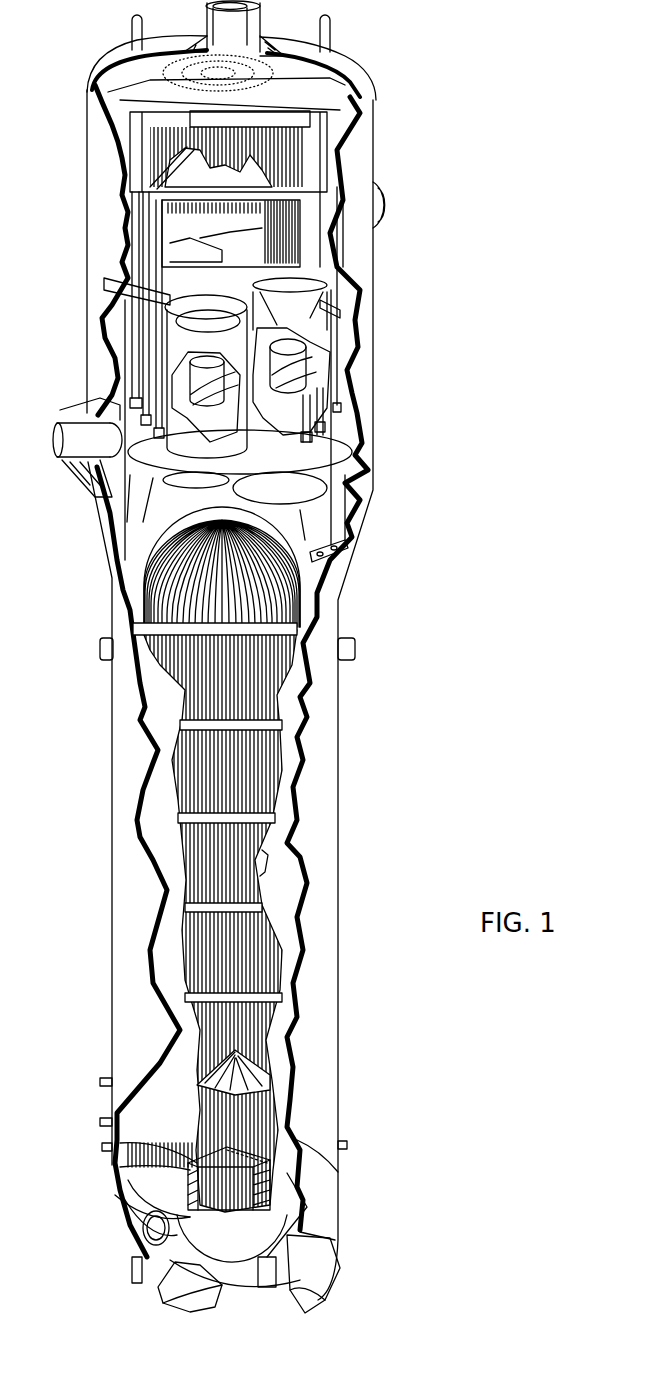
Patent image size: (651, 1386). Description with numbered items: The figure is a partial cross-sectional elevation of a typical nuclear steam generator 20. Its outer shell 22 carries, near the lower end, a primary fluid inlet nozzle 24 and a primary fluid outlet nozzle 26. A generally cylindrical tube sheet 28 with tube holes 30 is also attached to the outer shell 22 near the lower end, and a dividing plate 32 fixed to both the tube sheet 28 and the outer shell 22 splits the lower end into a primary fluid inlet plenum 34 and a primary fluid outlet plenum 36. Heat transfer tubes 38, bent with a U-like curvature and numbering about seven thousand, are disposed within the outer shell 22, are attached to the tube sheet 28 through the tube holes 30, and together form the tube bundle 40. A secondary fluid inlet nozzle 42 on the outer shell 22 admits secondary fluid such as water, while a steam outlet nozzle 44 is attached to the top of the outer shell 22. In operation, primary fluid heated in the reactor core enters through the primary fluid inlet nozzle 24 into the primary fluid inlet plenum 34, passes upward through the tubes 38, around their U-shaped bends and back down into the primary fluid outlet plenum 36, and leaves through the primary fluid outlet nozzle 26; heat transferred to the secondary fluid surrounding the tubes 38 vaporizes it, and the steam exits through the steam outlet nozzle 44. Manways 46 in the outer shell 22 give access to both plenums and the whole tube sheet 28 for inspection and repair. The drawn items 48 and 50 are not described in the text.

The nuclear steam generator 20 is at (438, 415).
The outer shell 22 is at (100, 212).
The primary fluid inlet nozzle 24 is at (323, 1283).
The primary fluid outlet nozzle 26 is at (173, 1293).
The tube sheet 28 is at (140, 1180).
The tube holes 30 is at (262, 1178).
The dividing plate 32 is at (233, 1247).
The primary fluid inlet plenum 34 is at (290, 1213).
The primary fluid outlet plenum 36 is at (133, 1213).
The tubes 38 is at (265, 872).
The tube bundle 40 is at (280, 748).
The secondary fluid inlet nozzle 42 is at (67, 467).
The steam outlet nozzle 44 is at (257, 29).
The manways 46 is at (155, 1238).
The upper internals assembly 48 is at (226, 336).
The control rod guide tubes 50 is at (239, 409).